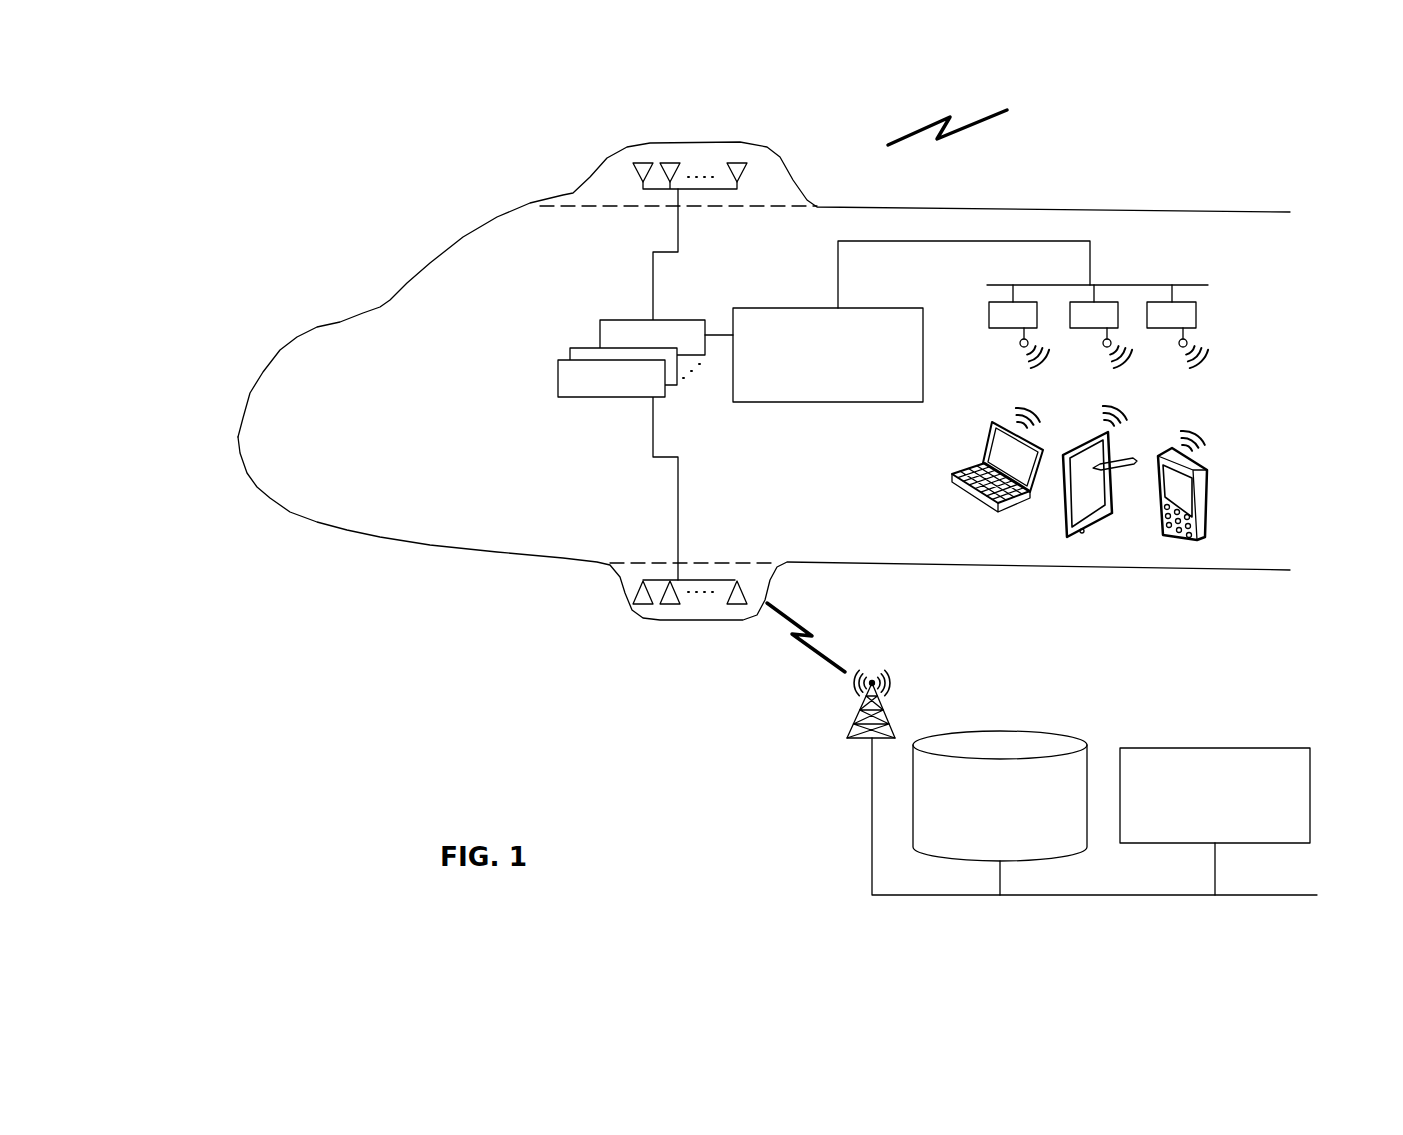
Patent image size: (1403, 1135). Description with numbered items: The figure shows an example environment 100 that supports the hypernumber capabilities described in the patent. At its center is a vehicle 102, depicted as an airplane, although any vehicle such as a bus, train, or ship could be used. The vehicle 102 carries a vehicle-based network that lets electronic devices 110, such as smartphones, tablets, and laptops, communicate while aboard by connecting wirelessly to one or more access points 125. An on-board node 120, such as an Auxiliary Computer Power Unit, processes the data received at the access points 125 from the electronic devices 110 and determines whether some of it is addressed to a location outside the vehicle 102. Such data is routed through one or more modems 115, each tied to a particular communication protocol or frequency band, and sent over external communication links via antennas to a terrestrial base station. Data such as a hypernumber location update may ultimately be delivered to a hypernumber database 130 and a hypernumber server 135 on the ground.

The environment 100 is at (1132, 96).
The vehicle 102 is at (347, 531).
The electronic devices 110 is at (1007, 520).
The modems 115 is at (600, 347).
The on-board node 120 is at (907, 307).
The access points 125 is at (1192, 285).
The hypernumber database 130 is at (1043, 736).
The hypernumber server 135 is at (1265, 748).